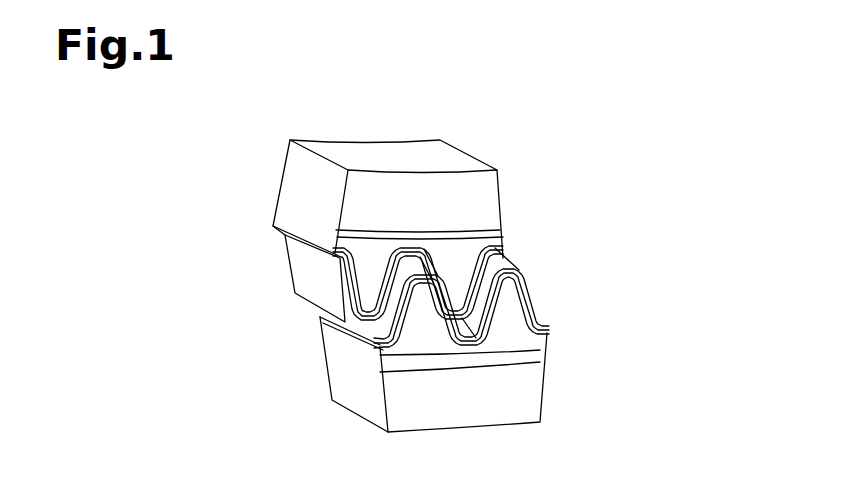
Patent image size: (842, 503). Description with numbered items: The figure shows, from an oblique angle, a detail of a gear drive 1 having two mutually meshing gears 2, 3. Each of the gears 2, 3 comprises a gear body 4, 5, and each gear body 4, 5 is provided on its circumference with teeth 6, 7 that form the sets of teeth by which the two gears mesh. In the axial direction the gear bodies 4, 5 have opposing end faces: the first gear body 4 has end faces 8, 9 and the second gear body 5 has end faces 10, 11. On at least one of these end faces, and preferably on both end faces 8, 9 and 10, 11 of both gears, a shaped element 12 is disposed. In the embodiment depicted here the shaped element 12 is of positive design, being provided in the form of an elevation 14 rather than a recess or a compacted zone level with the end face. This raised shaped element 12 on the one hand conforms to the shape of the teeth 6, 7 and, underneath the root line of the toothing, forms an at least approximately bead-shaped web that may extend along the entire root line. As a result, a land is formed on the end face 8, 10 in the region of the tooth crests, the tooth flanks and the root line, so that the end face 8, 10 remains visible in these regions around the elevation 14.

The gear drive 1 is at (608, 95).
The gear 2 is at (443, 148).
The gear 3 is at (310, 377).
The gear body 4 is at (366, 148).
The gear body 5 is at (350, 398).
The teeth 6 is at (283, 273).
The teeth 7 is at (542, 288).
The end face 8 is at (483, 208).
The end face 9 is at (278, 198).
The end face 10 is at (530, 388).
The end face 11 is at (317, 350).
The shaped element 12 is at (508, 243).
The elevation 14 is at (370, 270).